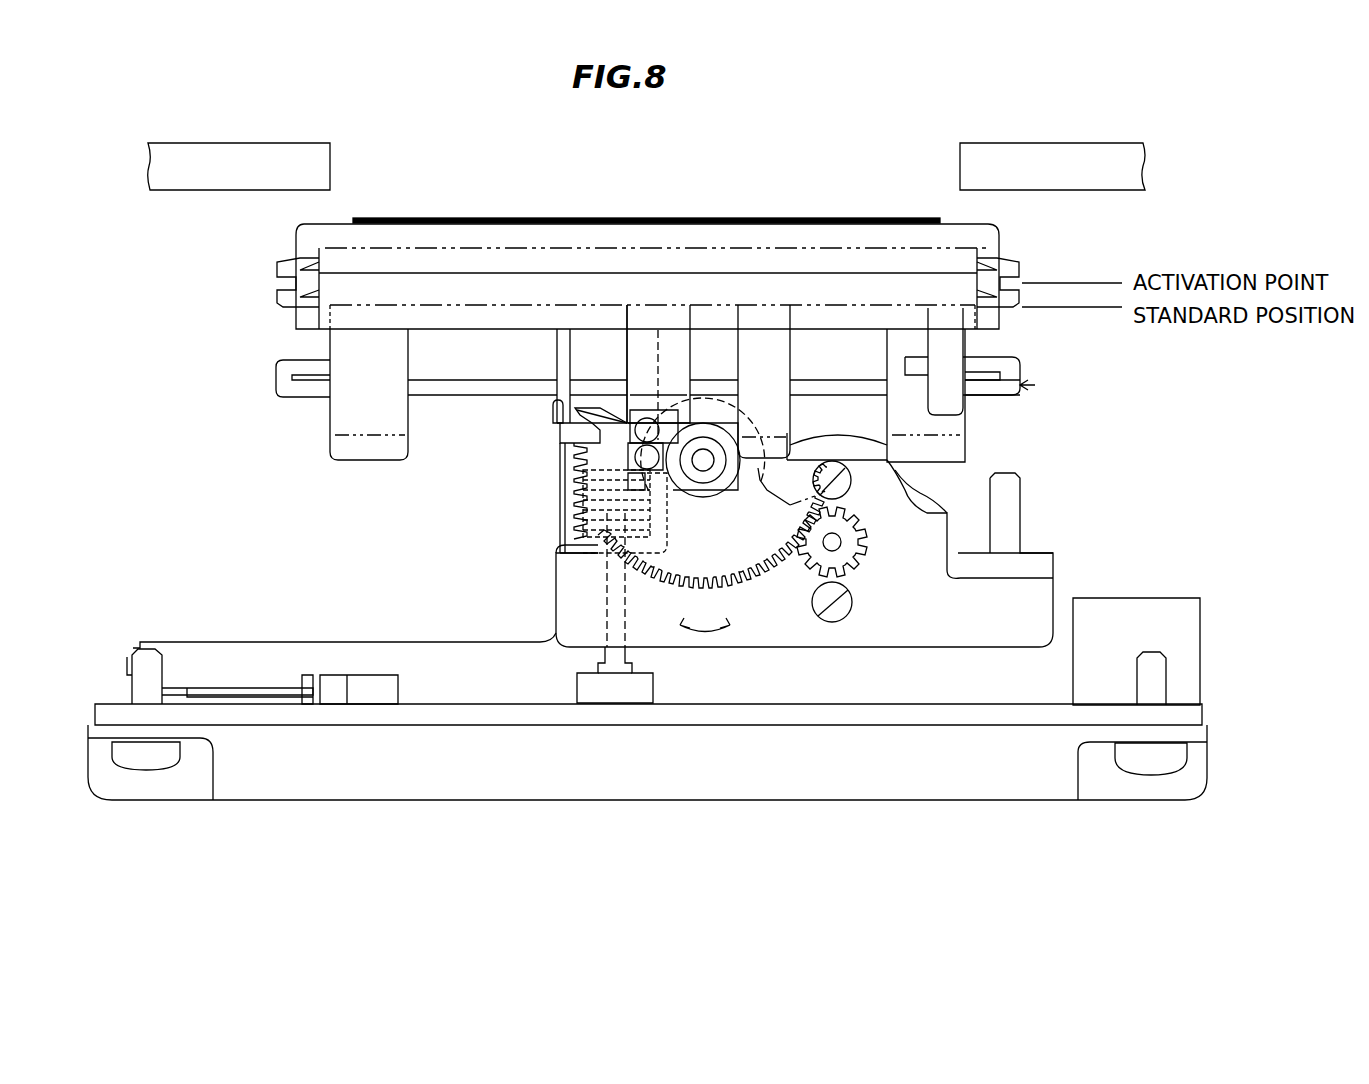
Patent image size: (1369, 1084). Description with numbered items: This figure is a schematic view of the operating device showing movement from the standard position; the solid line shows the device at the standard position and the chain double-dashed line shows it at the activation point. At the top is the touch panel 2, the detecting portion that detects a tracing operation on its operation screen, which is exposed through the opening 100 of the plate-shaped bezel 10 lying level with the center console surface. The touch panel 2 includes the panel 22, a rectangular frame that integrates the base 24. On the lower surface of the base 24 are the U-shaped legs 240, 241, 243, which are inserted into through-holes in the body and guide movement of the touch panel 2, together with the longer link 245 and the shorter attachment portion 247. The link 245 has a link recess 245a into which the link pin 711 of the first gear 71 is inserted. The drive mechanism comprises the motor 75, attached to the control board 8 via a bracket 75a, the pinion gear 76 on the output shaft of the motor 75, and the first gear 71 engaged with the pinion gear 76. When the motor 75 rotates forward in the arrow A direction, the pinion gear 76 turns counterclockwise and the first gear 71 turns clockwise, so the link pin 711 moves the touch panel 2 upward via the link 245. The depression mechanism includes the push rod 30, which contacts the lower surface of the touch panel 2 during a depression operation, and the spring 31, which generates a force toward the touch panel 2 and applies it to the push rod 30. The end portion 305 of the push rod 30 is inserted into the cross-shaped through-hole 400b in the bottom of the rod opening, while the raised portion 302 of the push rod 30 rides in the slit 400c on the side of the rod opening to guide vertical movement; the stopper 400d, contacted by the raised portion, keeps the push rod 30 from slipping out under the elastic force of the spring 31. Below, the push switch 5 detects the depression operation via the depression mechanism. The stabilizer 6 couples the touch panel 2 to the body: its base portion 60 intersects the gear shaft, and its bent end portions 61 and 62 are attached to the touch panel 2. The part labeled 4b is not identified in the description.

The opening 100 is at (333, 170).
The bezel 10 is at (1038, 160).
The touch panel 2 is at (281, 238).
The base 24 is at (353, 285).
The panel 22 is at (983, 253).
The end portion 62 is at (310, 365).
The leg 241 is at (353, 428).
The base portion 60 is at (835, 388).
The stabilizer 6 is at (1035, 392).
The attachment portion 247 is at (955, 368).
The end portion 61 is at (980, 362).
The push rod 30 is at (559, 369).
The link 245 is at (647, 368).
The link recess 245a is at (653, 435).
The leg 240 is at (773, 360).
The leg 243 is at (957, 447).
The first gear 71 is at (753, 543).
The pinion gear 76 is at (867, 535).
The motor 75 is at (920, 493).
The bracket 75a is at (908, 627).
The stopper 400d is at (553, 410).
The raised portion 302 is at (575, 427).
The slit 400c is at (593, 455).
The link pin 711 is at (570, 485).
The spring 31 is at (592, 523).
The through-hole 400b is at (597, 543).
The end portion 305 is at (603, 573).
The push switch 5 is at (613, 693).
The control board 8 is at (1173, 715).
The lower housing 4b is at (915, 780).